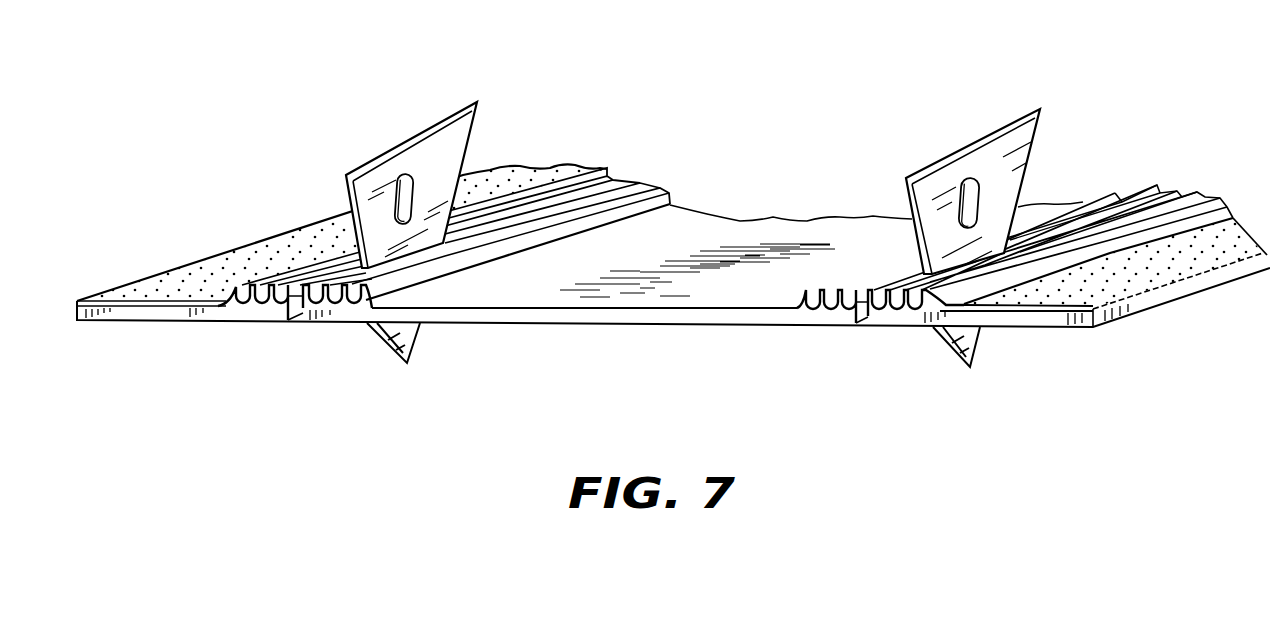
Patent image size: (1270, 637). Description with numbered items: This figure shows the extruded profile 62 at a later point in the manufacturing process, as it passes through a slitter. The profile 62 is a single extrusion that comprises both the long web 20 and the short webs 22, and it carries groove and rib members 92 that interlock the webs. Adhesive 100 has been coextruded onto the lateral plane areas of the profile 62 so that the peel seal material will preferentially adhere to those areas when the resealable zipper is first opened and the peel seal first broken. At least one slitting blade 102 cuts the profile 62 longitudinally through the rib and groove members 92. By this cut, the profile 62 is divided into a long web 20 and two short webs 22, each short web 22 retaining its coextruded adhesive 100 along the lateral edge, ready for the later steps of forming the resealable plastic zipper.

The long web 20 is at (750, 223).
The short webs 22 is at (210, 318).
The profile 62 is at (585, 315).
The groove and rib members 92 is at (320, 338).
The adhesive 100 is at (187, 275).
The slitting blade 102 is at (447, 133).